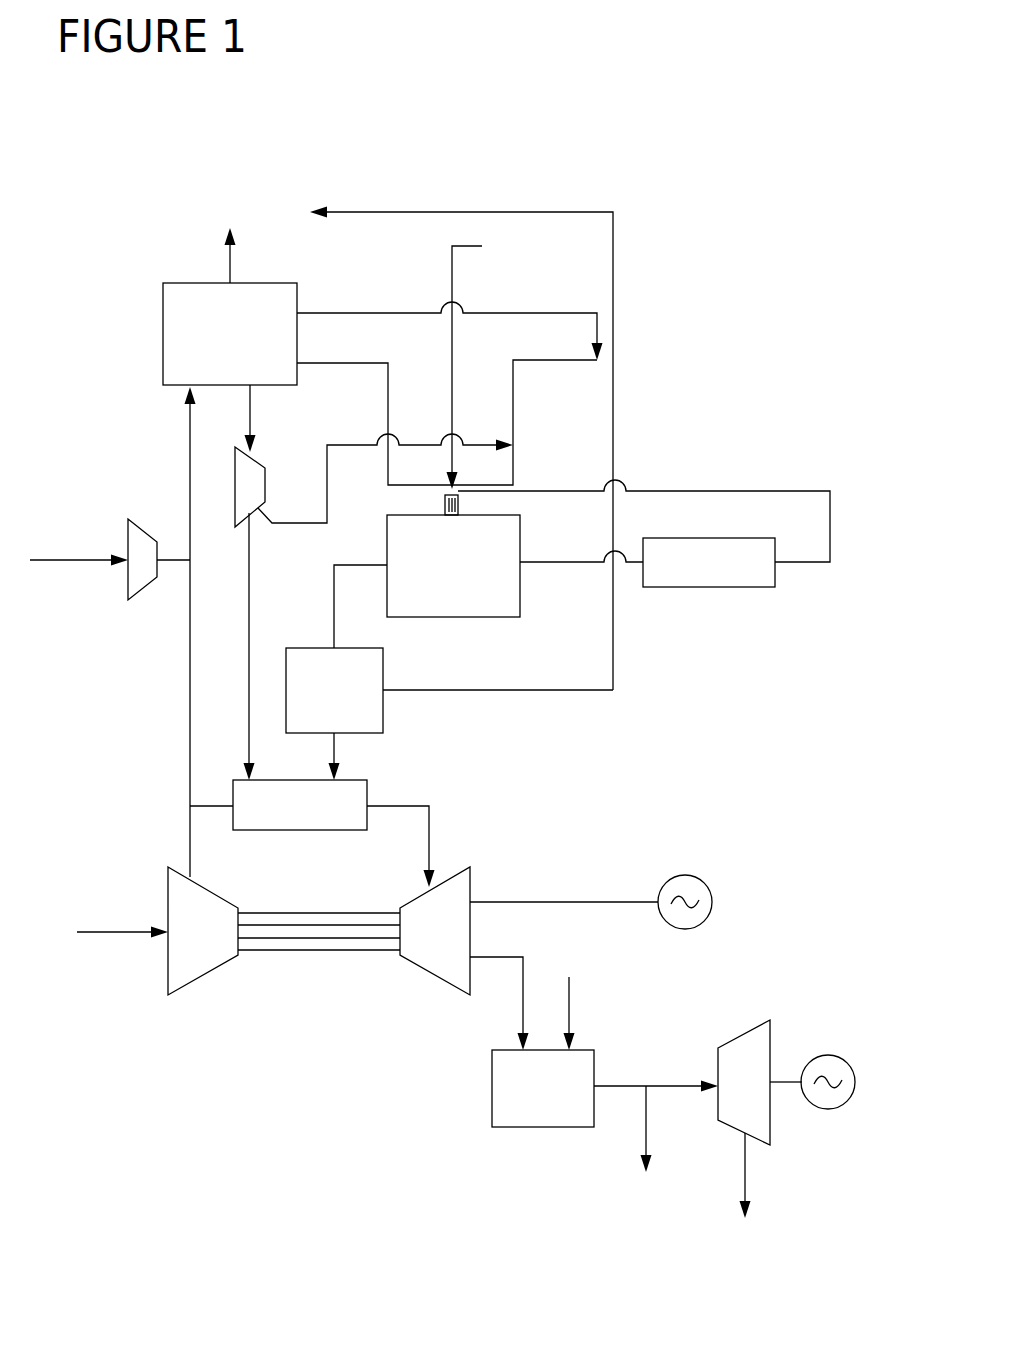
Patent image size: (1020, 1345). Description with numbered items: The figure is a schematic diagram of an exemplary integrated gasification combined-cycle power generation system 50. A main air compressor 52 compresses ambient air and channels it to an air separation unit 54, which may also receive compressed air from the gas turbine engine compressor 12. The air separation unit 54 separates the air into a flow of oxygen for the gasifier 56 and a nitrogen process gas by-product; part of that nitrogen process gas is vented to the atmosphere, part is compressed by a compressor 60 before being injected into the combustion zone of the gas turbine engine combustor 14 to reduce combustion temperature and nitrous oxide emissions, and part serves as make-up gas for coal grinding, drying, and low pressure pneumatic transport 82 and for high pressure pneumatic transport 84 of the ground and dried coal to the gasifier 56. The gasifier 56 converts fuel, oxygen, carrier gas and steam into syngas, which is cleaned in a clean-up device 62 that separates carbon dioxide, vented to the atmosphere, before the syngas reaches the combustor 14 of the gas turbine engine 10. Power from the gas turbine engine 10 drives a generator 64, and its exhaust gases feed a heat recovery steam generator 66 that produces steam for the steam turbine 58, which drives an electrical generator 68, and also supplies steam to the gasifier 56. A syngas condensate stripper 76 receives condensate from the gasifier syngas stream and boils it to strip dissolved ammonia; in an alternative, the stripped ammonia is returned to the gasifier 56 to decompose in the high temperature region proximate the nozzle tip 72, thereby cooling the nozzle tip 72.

The integrated gasification combined-cycle power generation system 50 is at (623, 158).
The main air compressor 52 is at (127, 530).
The air separation unit 54 is at (244, 349).
The low pressure pneumatic transport 82 is at (404, 312).
The compressor 60 is at (233, 468).
The high pressure pneumatic transport 84 is at (348, 447).
The nozzle tip 72 is at (459, 516).
The gasifier 56 is at (466, 589).
The syngas condensate stripper 76 is at (724, 575).
The clean-up device 62 is at (348, 703).
The gas turbine engine combustor 14 is at (314, 819).
The gas turbine engine 10 is at (140, 825).
The gas turbine engine compressor 12 is at (214, 948).
The generator 64 is at (704, 883).
The heat recovery steam generator 66 is at (557, 1101).
The steam turbine 58 is at (759, 1097).
The electrical generator 68 is at (843, 1058).